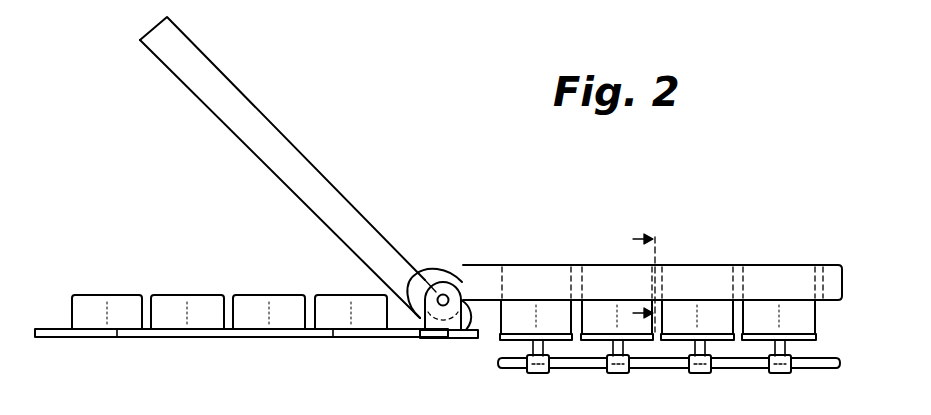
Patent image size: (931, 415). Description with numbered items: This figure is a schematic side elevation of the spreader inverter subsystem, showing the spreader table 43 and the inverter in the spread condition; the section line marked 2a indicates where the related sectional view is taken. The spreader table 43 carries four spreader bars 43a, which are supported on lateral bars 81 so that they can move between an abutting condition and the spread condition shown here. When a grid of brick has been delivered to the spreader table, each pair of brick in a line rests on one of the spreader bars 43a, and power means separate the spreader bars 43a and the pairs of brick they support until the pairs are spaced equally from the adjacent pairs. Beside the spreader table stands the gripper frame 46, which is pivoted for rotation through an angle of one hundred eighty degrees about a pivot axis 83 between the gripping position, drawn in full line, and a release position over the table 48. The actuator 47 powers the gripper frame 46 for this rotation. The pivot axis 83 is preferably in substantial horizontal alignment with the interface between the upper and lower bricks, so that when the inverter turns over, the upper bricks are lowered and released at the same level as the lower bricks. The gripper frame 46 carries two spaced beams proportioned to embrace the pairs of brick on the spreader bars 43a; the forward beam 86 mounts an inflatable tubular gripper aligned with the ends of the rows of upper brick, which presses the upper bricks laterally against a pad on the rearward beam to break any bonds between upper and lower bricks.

The section line 2a is at (664, 280).
The spreader table 43 is at (826, 329).
The spreader bars 43a is at (513, 340).
The gripper frame 46 is at (532, 268).
The actuator 47 is at (435, 268).
The table 48 is at (270, 338).
The lateral bars 81 is at (742, 366).
The pivot axis 83 is at (445, 298).
The forward beam 86 is at (768, 272).